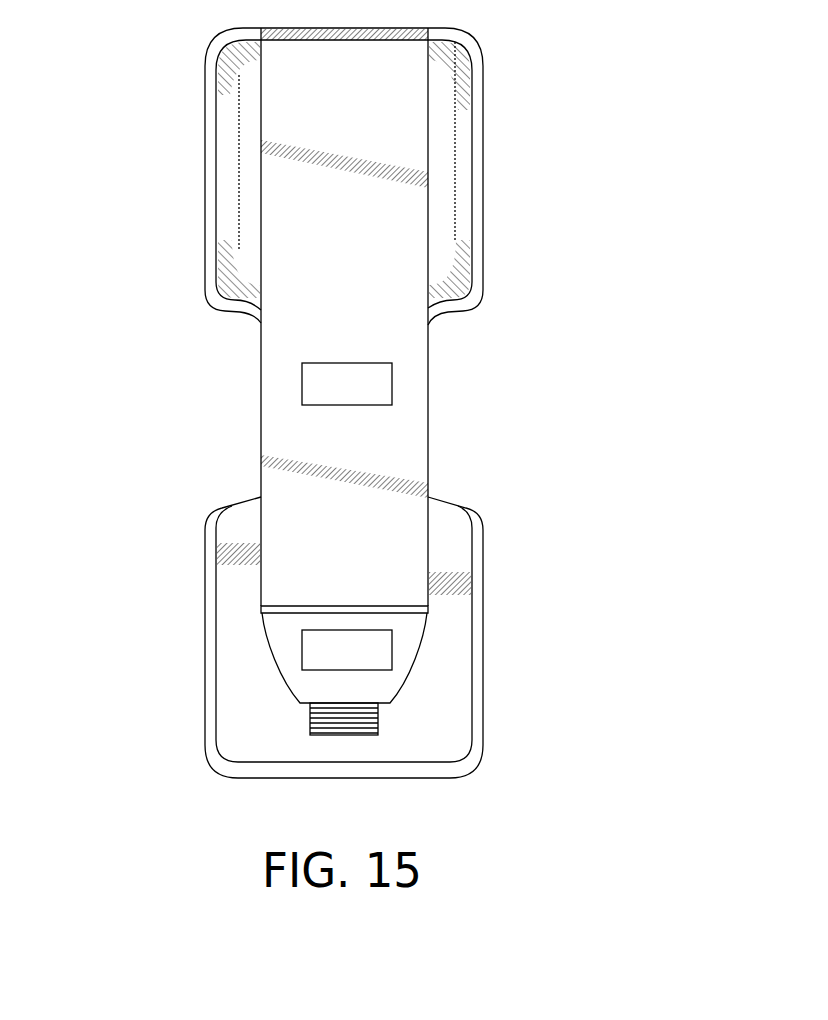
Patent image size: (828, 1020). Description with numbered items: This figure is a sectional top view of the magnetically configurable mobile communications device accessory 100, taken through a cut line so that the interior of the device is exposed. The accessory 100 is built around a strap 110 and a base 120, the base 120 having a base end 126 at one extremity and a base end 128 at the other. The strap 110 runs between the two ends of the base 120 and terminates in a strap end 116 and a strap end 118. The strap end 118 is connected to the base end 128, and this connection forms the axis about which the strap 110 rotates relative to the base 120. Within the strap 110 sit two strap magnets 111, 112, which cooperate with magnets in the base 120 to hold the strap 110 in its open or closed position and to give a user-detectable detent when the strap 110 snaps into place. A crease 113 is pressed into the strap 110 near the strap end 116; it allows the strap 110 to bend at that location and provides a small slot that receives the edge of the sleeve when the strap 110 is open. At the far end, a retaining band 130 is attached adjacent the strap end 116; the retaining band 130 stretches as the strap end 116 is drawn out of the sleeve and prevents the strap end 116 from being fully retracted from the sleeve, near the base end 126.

The magnetically configurable mobile communications device accessory 100 is at (371, 403).
The strap 110 is at (428, 393).
The strap magnet 111 is at (302, 647).
The strap magnet 112 is at (302, 383).
The crease 113 is at (262, 609).
The strap end 116 is at (415, 666).
The strap end 118 is at (261, 75).
The base 120 is at (483, 287).
The base end 126 is at (483, 697).
The base end 128 is at (483, 73).
The retaining band 130 is at (378, 731).